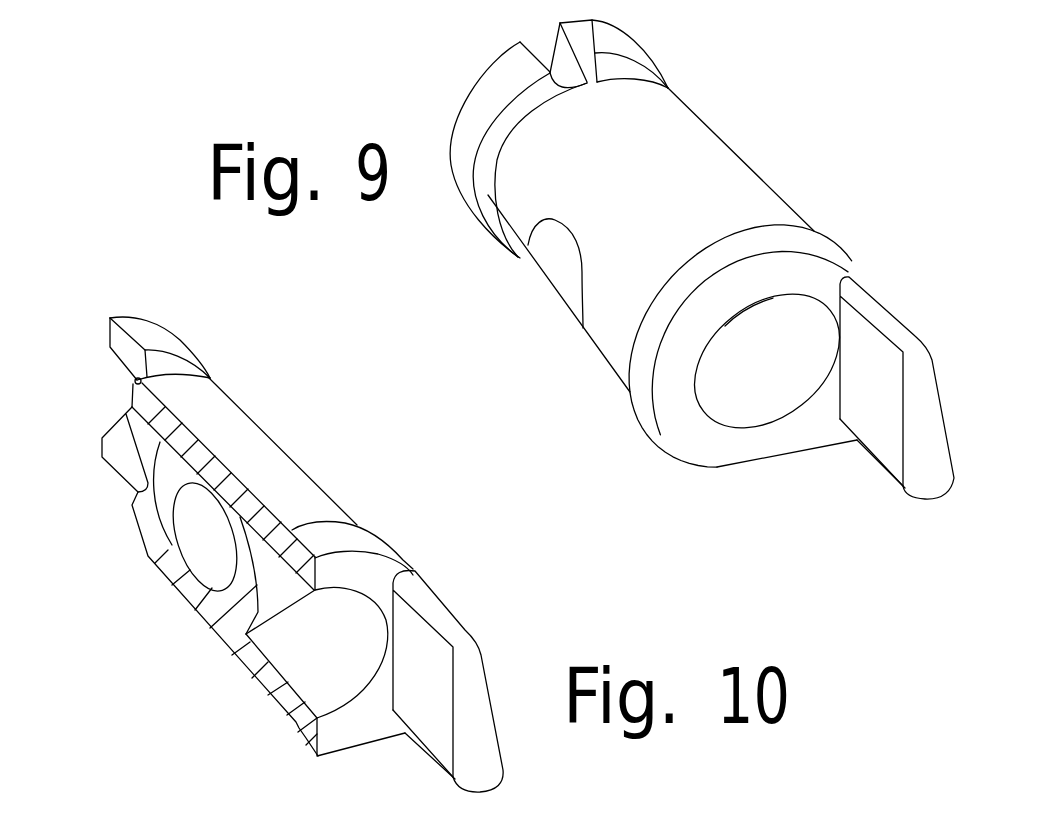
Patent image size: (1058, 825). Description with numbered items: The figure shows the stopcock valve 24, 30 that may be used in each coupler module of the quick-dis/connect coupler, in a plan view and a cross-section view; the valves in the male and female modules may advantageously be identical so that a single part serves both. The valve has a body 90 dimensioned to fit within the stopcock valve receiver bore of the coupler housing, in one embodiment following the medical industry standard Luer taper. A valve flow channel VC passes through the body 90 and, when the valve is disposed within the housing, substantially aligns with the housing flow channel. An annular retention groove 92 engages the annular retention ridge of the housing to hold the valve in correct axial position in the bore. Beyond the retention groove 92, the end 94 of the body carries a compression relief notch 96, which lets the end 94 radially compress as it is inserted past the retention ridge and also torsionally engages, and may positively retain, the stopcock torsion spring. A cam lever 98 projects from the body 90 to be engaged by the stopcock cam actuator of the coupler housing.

In FIG. 9, the stopcock valve 24 is at (673, 283).
In FIG. 10, the stopcock valve 24 is at (278, 554).
In FIG. 9, the stopcock valve 30 is at (673, 283).
In FIG. 10, the stopcock valve 30 is at (278, 554).
In FIG. 9, the body 90 is at (707, 175).
In FIG. 10, the body 90 is at (263, 463).
In FIG. 9, the annular retention groove 92 is at (493, 153).
In FIG. 9, the end 94 is at (482, 107).
In FIG. 10, the end 94 is at (160, 362).
In FIG. 9, the compression relief notch 96 is at (563, 73).
In FIG. 10, the compression relief notch 96 is at (117, 476).
In FIG. 9, the cam lever 98 is at (929, 455).
In FIG. 10, the cam lever 98 is at (448, 682).
In FIG. 9, the valve flow channel VC is at (575, 268).
In FIG. 10, the valve flow channel VC is at (213, 530).